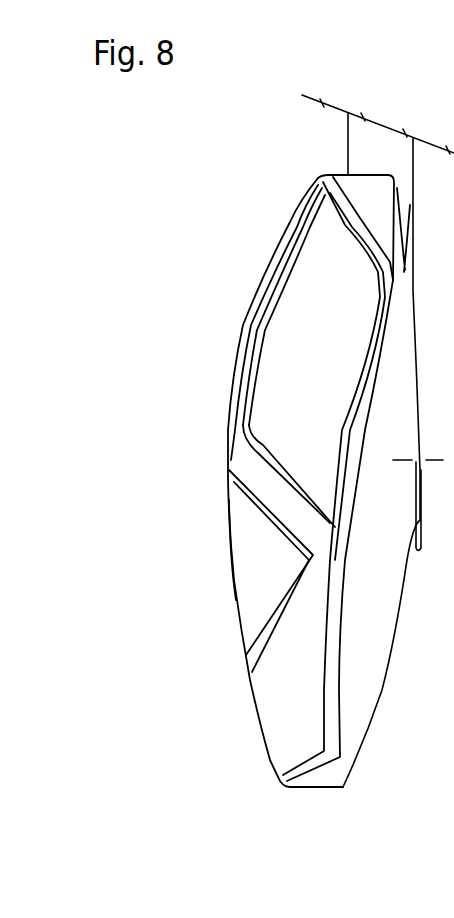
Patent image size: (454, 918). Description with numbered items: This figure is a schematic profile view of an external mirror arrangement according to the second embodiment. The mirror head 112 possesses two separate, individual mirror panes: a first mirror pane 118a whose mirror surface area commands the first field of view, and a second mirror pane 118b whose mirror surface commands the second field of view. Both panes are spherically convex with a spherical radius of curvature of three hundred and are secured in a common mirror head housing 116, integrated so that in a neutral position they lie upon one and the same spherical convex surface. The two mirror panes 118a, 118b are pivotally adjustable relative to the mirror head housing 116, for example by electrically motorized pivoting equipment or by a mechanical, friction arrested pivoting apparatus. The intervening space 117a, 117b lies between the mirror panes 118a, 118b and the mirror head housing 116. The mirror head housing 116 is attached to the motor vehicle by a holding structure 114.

The mirror head 112 is at (262, 727).
The holding structure 114 is at (360, 151).
The mirror head housing 116 is at (338, 778).
The intervening space 117a is at (262, 655).
The intervening space 117b is at (253, 458).
The first mirror pane 118a is at (233, 591).
The second mirror pane 118b is at (260, 375).